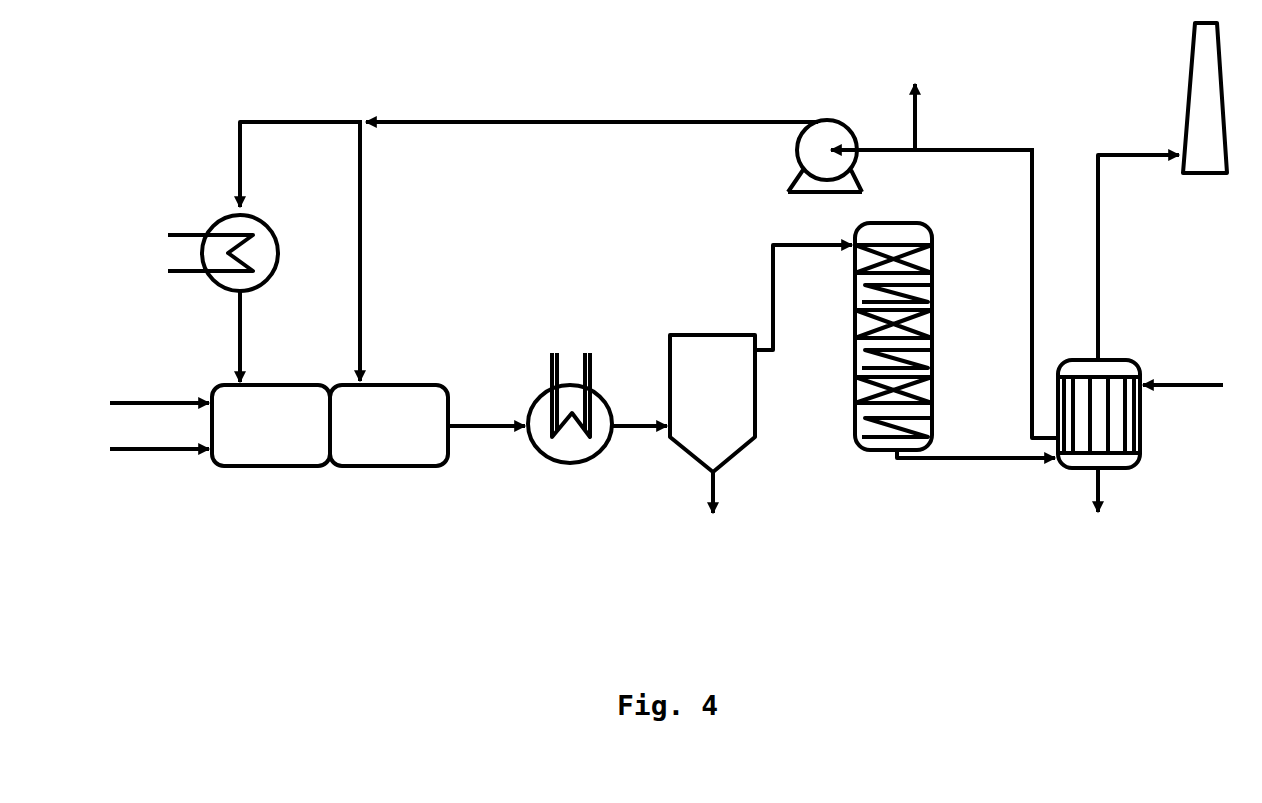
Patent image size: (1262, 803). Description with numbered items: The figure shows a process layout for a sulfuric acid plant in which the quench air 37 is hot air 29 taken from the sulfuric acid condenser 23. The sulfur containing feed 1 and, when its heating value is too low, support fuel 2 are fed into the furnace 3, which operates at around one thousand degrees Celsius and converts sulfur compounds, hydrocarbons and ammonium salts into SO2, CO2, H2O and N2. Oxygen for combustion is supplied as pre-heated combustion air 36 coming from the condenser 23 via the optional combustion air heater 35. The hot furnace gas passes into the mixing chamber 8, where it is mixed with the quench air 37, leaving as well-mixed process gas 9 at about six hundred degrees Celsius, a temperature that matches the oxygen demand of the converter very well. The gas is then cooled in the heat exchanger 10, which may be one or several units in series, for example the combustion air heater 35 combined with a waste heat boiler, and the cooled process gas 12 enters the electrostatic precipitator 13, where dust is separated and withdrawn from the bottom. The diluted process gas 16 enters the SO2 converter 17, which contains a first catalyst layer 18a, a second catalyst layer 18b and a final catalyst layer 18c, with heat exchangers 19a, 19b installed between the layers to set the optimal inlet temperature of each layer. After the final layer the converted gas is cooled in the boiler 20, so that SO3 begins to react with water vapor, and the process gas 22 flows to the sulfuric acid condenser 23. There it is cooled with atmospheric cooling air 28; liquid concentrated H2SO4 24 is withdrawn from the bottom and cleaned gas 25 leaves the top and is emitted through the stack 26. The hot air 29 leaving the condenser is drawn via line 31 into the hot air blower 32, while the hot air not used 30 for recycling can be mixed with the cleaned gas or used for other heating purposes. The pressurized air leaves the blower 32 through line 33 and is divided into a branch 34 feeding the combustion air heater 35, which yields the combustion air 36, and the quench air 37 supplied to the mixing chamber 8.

The sulfur containing feed 1 is at (159, 469).
The support fuel 2 is at (159, 385).
The furnace 3 is at (271, 425).
The mixing chamber 8 is at (389, 425).
The well-mixed process gas 9 is at (486, 447).
The heat exchanger 10 is at (570, 426).
The cooled stream 12 is at (640, 451).
The electrostatic precipitator 13 is at (712, 424).
The diluted process gas 16 is at (803, 281).
The SO2 converter 17 is at (876, 362).
The catalyst layer 18a is at (925, 260).
The catalyst layer 18b is at (925, 324).
The final catalyst layer 18c is at (924, 391).
The heat exchanger 19a is at (928, 294).
The heat exchanger 19b is at (929, 359).
The boiler 20 is at (922, 427).
The process gas 22 is at (976, 475).
The sulfuric acid condenser 23 is at (1113, 397).
The liquid concentrated H2SO4 24 is at (1124, 495).
The cleaned gas 25 is at (1138, 257).
The stack 26 is at (1186, 98).
The cooling media 28 is at (1183, 407).
The hot air 29 is at (1026, 278).
The hot air not used 30 is at (915, 102).
The pump suction stream 31 is at (931, 134).
The hot air blower 32 is at (825, 139).
The recycle line 33 is at (592, 105).
The recycle branch 34 is at (301, 164).
The combustion air heater 35 is at (201, 253).
The pre-heated combustion air 36 is at (259, 336).
The quench air 37 is at (382, 250).